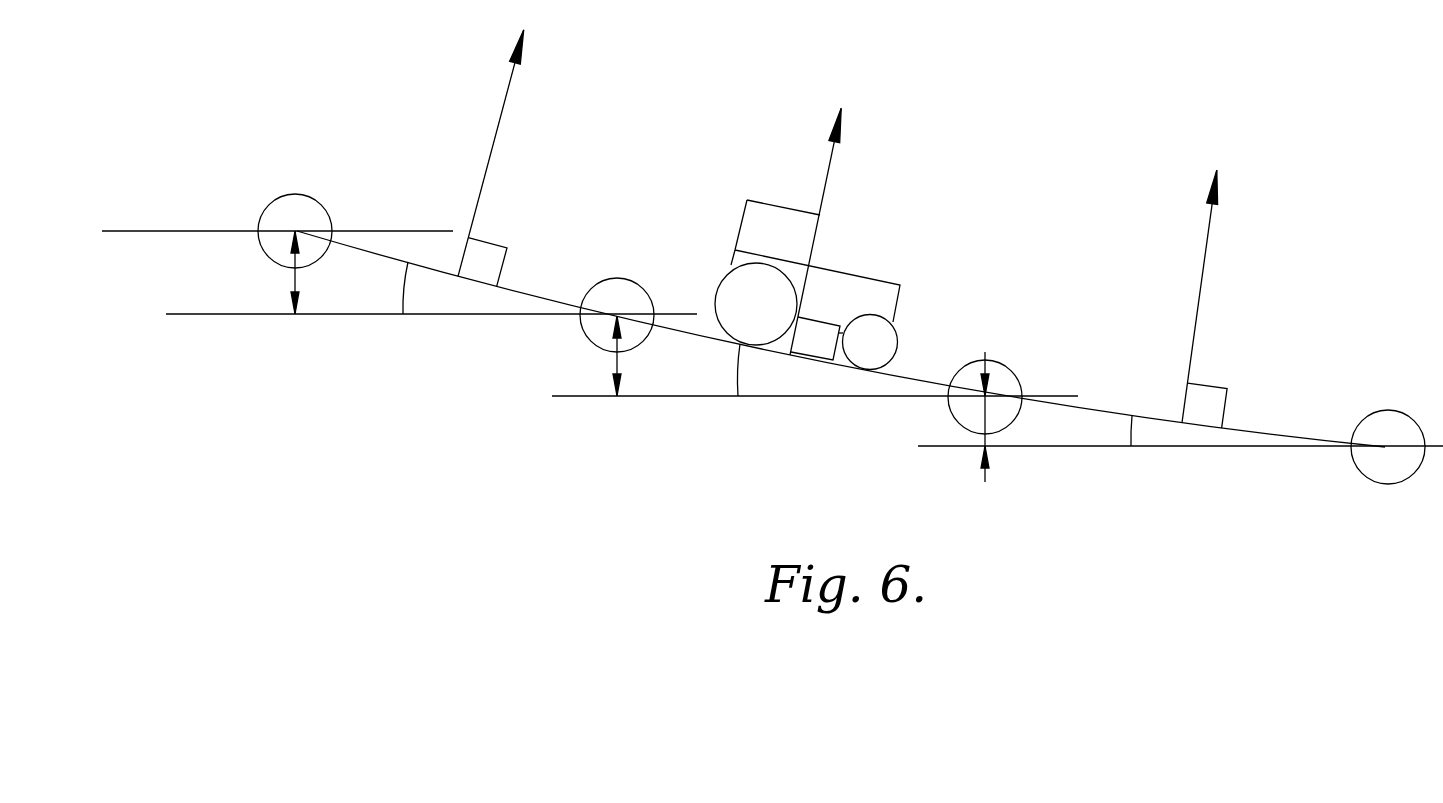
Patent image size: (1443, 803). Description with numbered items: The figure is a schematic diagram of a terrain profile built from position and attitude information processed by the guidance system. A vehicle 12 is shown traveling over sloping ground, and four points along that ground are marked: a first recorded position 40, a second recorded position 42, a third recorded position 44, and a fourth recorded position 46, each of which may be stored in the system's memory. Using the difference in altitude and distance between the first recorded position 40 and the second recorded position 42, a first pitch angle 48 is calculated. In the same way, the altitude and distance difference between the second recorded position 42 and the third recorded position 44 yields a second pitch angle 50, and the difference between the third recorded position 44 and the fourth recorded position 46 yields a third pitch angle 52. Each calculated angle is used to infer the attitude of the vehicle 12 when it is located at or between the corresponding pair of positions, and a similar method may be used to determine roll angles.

The vehicle 12 is at (766, 208).
The first recorded position 40 is at (295, 233).
The second recorded position 42 is at (617, 317).
The third recorded position 44 is at (985, 400).
The fourth recorded position 46 is at (1388, 420).
The first pitch angle 48 is at (427, 316).
The second pitch angle 50 is at (758, 398).
The third pitch angle 52 is at (1158, 449).